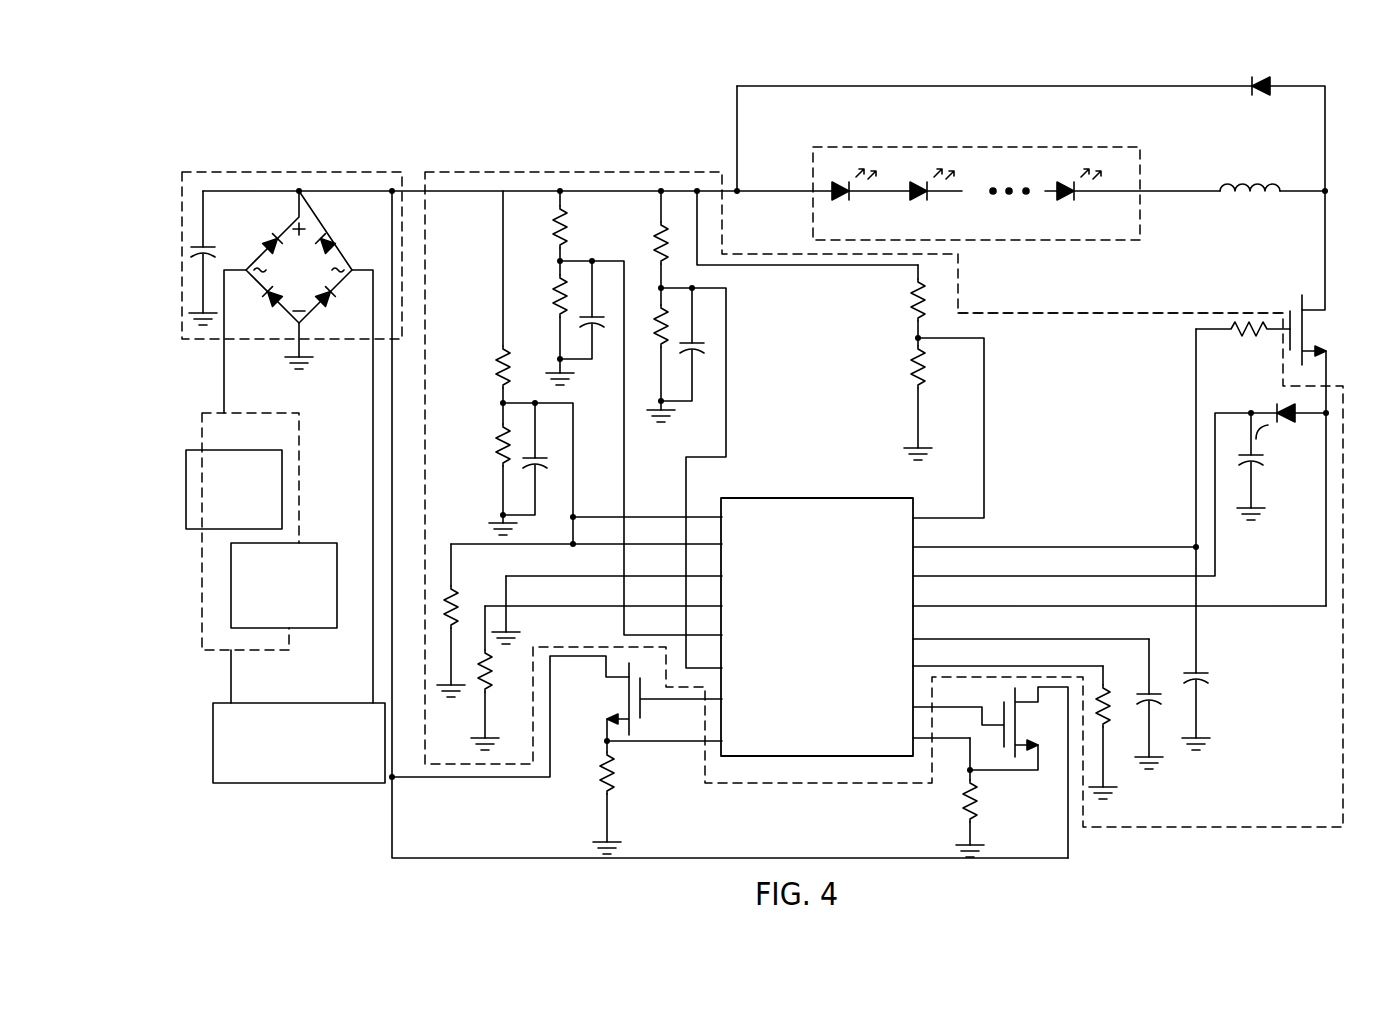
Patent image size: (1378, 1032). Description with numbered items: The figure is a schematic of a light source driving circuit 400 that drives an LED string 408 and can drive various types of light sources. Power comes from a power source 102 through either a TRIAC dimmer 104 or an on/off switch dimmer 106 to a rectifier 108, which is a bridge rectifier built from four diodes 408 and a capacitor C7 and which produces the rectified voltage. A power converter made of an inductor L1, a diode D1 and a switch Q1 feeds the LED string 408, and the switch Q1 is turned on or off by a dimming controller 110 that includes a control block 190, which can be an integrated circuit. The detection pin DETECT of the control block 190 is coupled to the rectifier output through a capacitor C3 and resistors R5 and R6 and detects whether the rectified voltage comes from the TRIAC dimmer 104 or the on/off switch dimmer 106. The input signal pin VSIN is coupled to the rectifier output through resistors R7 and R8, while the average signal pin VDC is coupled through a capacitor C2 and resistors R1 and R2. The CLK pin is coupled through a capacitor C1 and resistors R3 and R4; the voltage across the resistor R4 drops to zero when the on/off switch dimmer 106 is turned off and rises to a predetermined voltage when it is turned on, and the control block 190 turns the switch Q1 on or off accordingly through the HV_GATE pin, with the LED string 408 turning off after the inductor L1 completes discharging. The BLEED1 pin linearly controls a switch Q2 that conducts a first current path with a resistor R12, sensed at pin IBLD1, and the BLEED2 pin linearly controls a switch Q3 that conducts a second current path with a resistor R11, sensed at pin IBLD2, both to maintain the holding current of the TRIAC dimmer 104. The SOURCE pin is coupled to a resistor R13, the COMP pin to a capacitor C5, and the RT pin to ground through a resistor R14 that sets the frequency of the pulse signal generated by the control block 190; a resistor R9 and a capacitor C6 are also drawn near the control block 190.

The light source driving circuit 400 is at (632, 150).
The rectifier 108 is at (265, 172).
The LED string 408 is at (335, 250).
The TRIAC dimmer 104 is at (268, 450).
The on/off switch dimmer 106 is at (302, 543).
The power source 102 is at (312, 703).
The control block 190 is at (800, 498).
The dimming controller 110 is at (1055, 313).
The capacitor C7 is at (212, 255).
The resistor R1 is at (497, 362).
The resistor R2 is at (497, 442).
The resistor R3 is at (552, 228).
The resistor R4 is at (552, 293).
The resistor R5 is at (654, 241).
The resistor R6 is at (654, 332).
The resistor R7 is at (914, 300).
The resistor R8 is at (915, 363).
The resistor R9 is at (1110, 696).
The resistor R11 is at (981, 807).
The resistor R12 is at (614, 782).
The resistor R13 is at (490, 686).
The resistor R14 is at (458, 596).
The capacitor C1 is at (594, 314).
The capacitor C2 is at (540, 458).
The capacitor C3 is at (694, 346).
The capacitor C5 is at (1156, 688).
The capacitor C6 is at (1204, 672).
The switch Q1 is at (1300, 300).
The switch Q2 is at (647, 708).
The switch Q3 is at (981, 736).
The diode D1 is at (1252, 80).
The inductor L1 is at (1275, 188).